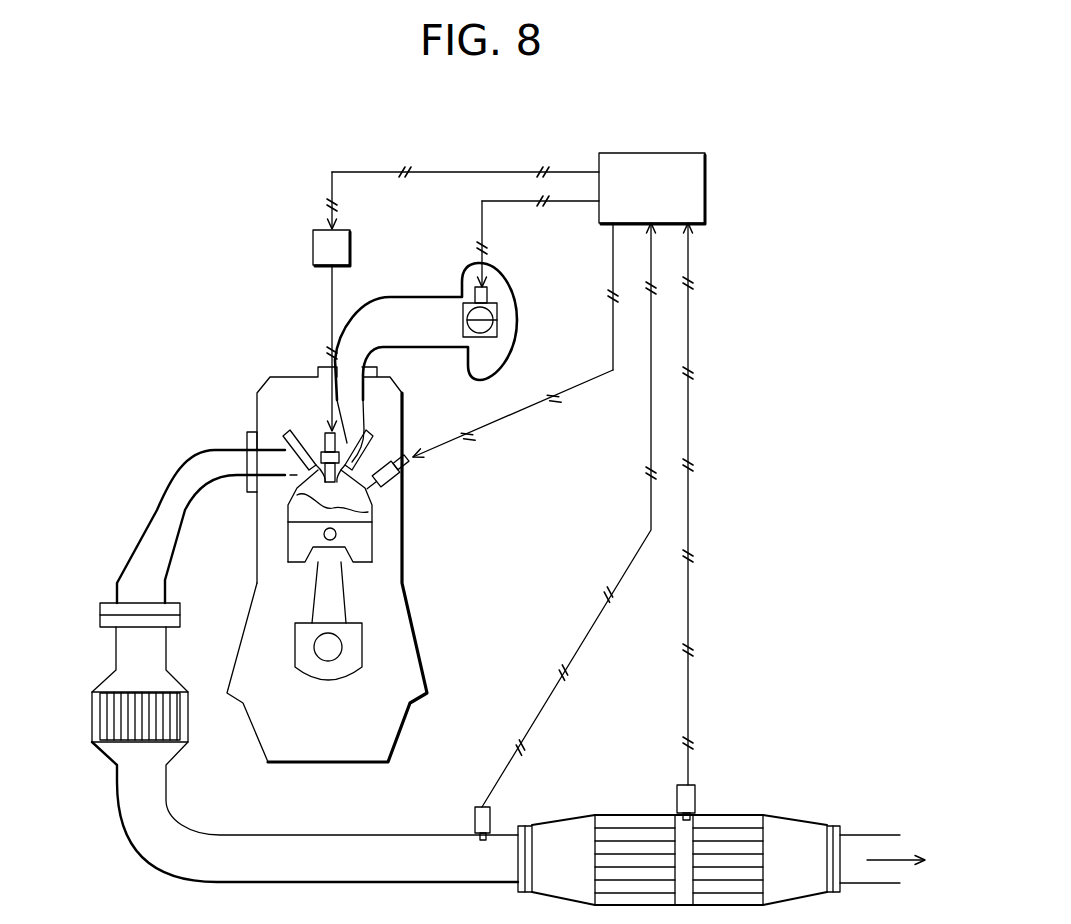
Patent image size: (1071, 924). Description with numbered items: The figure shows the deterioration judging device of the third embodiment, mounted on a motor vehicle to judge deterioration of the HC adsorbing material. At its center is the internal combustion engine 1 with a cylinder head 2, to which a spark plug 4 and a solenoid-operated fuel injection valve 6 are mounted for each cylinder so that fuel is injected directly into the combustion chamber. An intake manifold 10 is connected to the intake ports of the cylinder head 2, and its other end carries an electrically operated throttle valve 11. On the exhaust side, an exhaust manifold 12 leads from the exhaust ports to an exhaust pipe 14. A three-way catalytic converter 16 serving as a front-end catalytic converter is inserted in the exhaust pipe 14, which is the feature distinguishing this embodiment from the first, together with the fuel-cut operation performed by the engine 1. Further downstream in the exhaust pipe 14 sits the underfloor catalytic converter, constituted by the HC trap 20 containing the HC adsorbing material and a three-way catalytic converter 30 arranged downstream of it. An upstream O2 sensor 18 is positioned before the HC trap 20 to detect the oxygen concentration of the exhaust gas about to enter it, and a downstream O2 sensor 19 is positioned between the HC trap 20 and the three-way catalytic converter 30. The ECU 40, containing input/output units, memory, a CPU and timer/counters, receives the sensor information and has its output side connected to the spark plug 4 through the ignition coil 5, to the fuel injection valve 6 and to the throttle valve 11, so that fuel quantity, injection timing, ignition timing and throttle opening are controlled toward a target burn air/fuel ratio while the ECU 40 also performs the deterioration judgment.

The internal combustion engine 1 is at (404, 533).
The cylinder head 2 is at (257, 398).
The spark plug 4 is at (322, 455).
The ignition coil 5 is at (313, 247).
The fuel injection valve 6 is at (408, 470).
The intake manifold 10 is at (413, 307).
The throttle valve 11 is at (497, 312).
The exhaust manifold 12 is at (160, 515).
The exhaust pipe 14 is at (352, 848).
The three-way catalytic converter 16 is at (92, 718).
The upstream O2 sensor 18 is at (480, 805).
The downstream O2 sensor 19 is at (688, 785).
The HC trap 20 is at (628, 830).
The three-way catalytic converter 30 is at (738, 830).
The ECU 40 is at (705, 200).